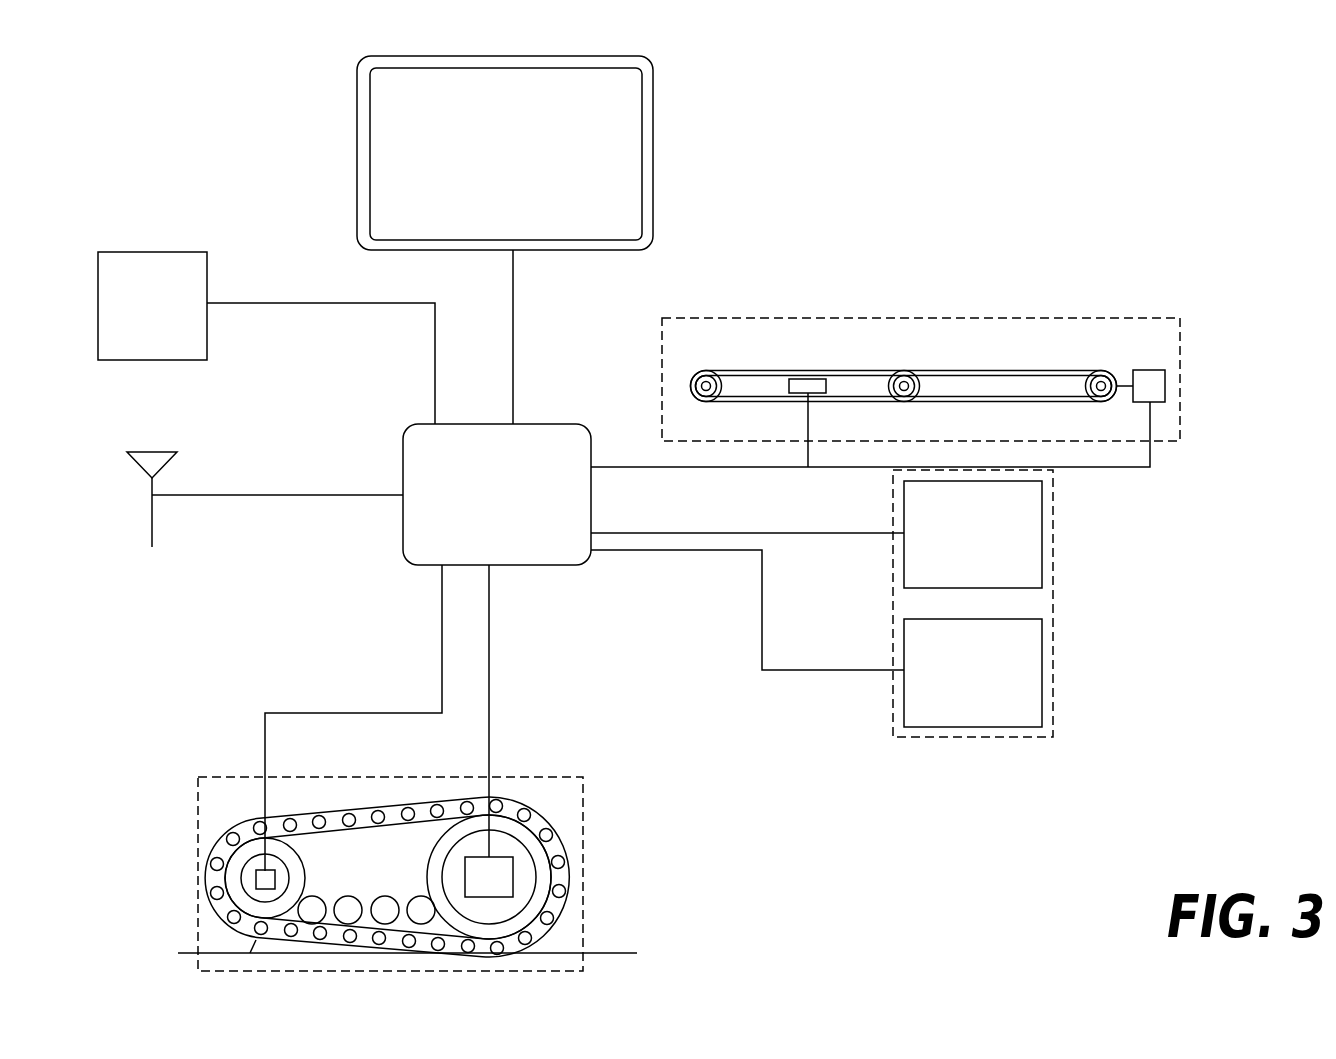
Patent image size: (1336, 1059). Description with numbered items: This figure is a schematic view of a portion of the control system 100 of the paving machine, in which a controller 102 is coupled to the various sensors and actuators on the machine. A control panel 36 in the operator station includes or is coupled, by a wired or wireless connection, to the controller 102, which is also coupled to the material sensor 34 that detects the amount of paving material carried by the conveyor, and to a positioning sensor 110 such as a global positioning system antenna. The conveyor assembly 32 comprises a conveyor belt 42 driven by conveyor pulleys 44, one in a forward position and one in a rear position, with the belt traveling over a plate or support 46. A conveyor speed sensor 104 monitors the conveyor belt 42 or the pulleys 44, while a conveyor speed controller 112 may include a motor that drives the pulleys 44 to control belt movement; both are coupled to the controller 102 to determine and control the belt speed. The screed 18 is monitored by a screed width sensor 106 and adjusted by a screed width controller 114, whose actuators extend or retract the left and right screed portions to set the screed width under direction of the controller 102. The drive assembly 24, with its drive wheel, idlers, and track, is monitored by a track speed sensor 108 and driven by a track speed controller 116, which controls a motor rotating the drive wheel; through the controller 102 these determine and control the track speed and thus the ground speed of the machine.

The control system 100 is at (1057, 128).
The control panel 36 is at (653, 157).
The material sensor 34 is at (207, 257).
The positioning sensor 110 is at (152, 480).
The controller 102 is at (532, 565).
The conveyor assembly 32 is at (1180, 334).
The conveyor belt 42 is at (772, 371).
The conveyor pulley 44 is at (703, 372).
The support 46 is at (897, 372).
The conveyor speed sensor 104 is at (812, 379).
The conveyor speed controller 112 is at (1150, 371).
The screed 18 is at (1053, 717).
The screed width sensor 106 is at (1042, 530).
The screed width controller 114 is at (1042, 668).
The drive assembly 24 is at (583, 793).
The track speed sensor 108 is at (263, 886).
The track speed controller 116 is at (515, 889).